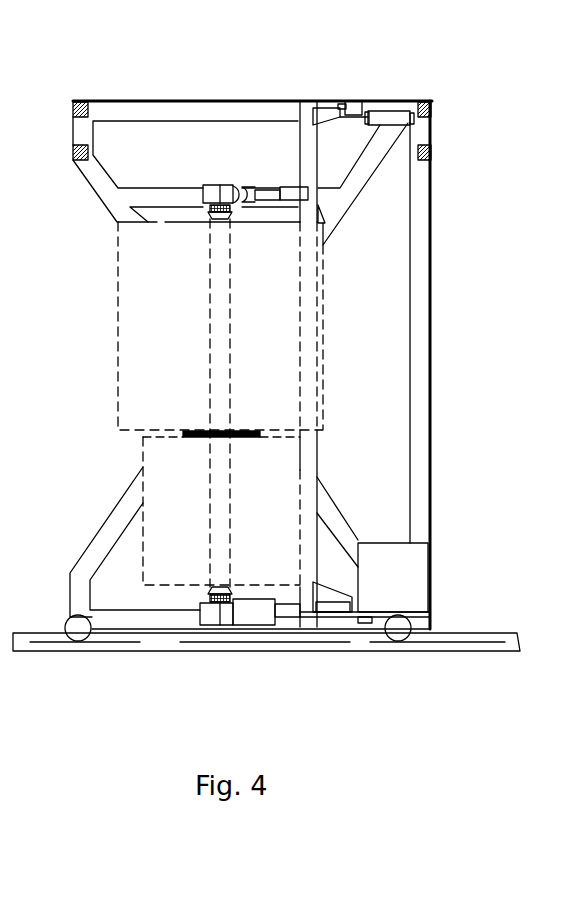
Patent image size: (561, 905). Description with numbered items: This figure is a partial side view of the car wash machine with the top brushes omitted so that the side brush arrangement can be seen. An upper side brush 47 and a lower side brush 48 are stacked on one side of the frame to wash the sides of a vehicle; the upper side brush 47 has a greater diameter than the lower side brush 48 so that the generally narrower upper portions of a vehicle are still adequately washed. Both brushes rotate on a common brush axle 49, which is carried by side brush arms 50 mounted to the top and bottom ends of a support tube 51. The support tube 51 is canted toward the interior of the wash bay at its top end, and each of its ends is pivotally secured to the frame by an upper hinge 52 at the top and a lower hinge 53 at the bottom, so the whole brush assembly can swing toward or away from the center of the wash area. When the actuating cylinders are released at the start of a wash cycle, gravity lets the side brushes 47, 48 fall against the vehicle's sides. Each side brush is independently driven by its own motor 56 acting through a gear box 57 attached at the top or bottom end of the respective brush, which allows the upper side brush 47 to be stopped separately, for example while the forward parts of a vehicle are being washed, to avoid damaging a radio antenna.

The upper side brush 47 is at (122, 367).
The lower side brush 48 is at (150, 457).
The brush axle 49 is at (217, 330).
The side brush arms 50 is at (290, 190).
The support tube 51 is at (308, 141).
The upper hinge 52 is at (326, 112).
The lower hinge 53 is at (334, 603).
The motor 56 is at (250, 185).
The gear box 57 is at (211, 193).